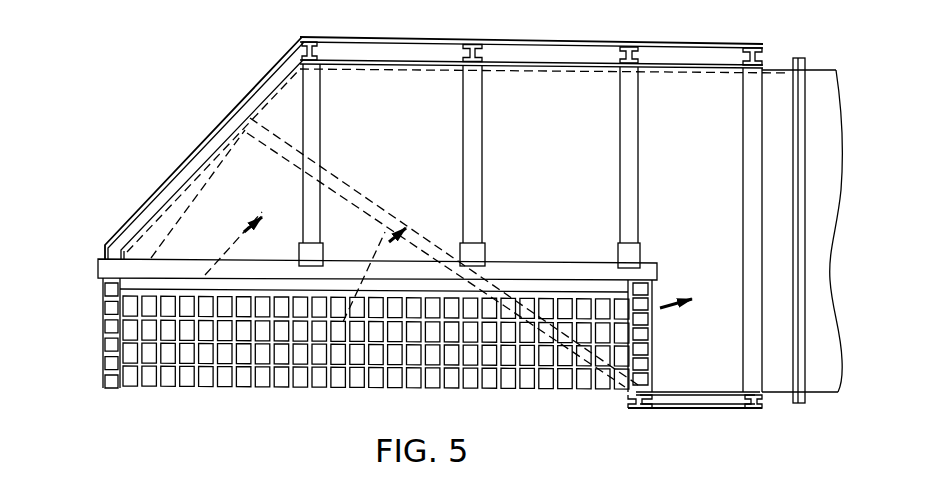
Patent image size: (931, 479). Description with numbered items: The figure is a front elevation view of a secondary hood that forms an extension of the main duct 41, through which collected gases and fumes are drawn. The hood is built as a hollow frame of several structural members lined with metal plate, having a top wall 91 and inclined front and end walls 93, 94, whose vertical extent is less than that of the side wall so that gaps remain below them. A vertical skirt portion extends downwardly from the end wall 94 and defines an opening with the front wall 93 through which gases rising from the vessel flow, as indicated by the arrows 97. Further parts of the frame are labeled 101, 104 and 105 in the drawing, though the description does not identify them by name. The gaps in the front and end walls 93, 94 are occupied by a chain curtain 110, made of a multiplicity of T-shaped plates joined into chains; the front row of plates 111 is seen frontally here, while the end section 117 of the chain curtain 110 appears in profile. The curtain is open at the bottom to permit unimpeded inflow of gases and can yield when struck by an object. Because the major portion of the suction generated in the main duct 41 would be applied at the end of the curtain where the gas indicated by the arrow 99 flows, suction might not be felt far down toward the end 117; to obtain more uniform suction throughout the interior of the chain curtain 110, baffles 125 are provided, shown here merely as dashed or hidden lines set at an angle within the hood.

The main duct 41 is at (829, 67).
The top wall 91 is at (594, 75).
The front wall 93 is at (410, 120).
The end wall 94 is at (273, 96).
The arrows 97 is at (231, 239).
The arrow 99 is at (656, 311).
The rail connector 101 is at (478, 52).
The post 104 is at (484, 182).
The post base 105 is at (482, 251).
The chain curtain 110 is at (568, 396).
The front row of plates 111 is at (229, 374).
The end section of chain curtain 117 is at (100, 317).
The baffles 125 is at (380, 200).